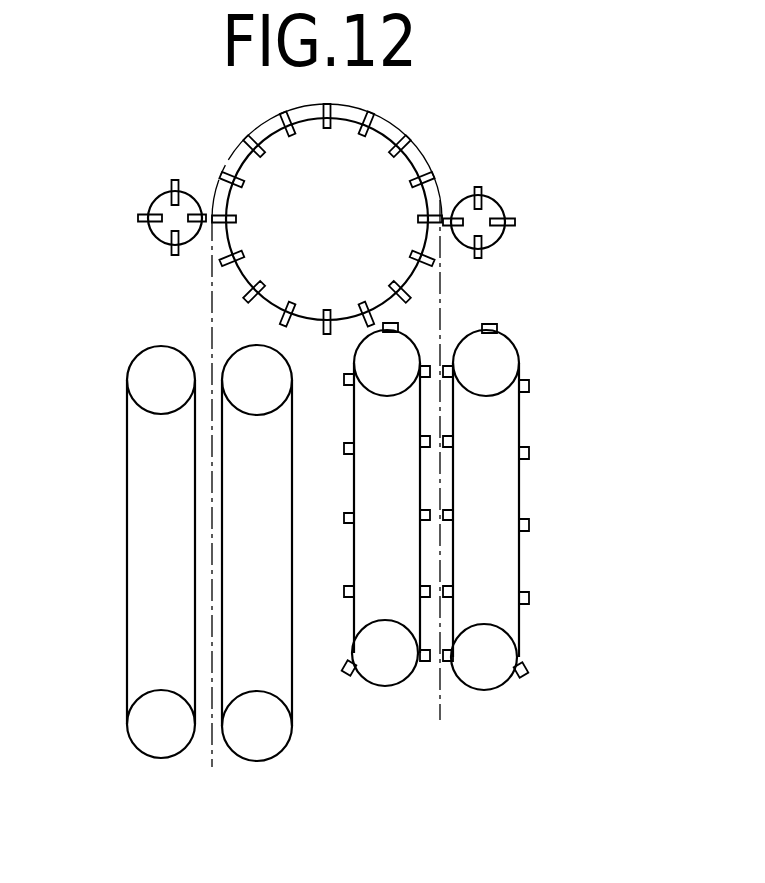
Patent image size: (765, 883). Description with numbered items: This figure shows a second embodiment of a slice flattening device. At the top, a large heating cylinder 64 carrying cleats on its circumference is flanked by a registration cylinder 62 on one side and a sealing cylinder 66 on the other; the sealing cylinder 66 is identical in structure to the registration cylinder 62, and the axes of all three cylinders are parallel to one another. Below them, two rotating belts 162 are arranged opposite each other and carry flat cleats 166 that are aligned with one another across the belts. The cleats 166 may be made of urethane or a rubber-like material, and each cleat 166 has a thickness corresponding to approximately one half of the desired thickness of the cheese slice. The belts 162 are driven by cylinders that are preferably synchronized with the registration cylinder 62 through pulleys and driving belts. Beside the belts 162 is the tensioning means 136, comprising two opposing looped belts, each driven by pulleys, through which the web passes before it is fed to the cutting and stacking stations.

The heating cylinder 64 is at (277, 158).
The sealing cylinder 66 is at (162, 196).
The registration cylinder 62 is at (498, 206).
The tensioning means 136 is at (127, 520).
The rotating belts 162 is at (353, 495).
The cleats 166 is at (344, 592).